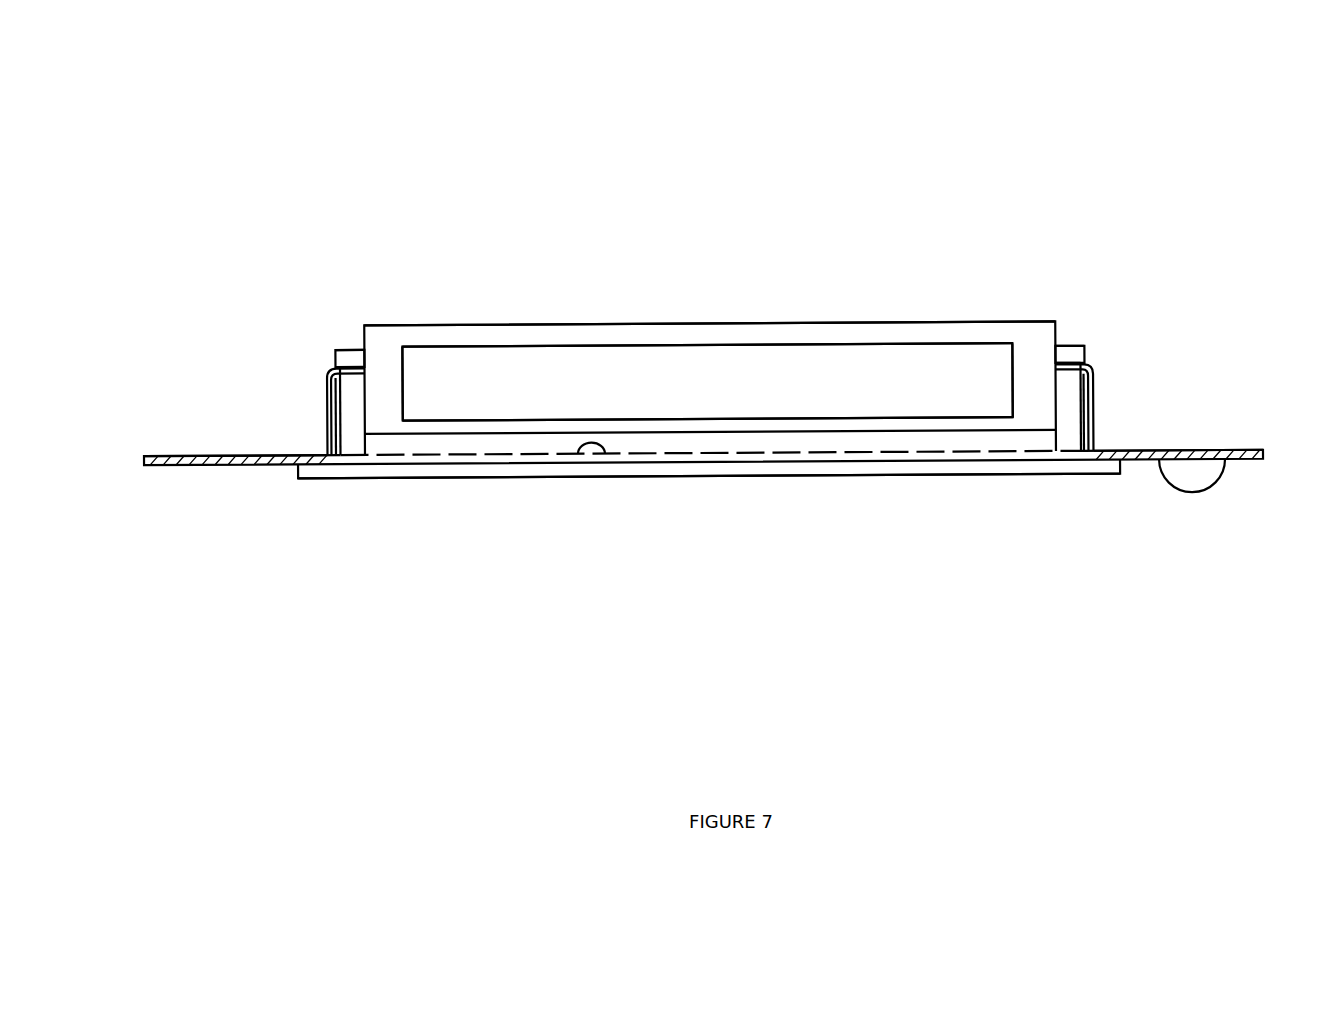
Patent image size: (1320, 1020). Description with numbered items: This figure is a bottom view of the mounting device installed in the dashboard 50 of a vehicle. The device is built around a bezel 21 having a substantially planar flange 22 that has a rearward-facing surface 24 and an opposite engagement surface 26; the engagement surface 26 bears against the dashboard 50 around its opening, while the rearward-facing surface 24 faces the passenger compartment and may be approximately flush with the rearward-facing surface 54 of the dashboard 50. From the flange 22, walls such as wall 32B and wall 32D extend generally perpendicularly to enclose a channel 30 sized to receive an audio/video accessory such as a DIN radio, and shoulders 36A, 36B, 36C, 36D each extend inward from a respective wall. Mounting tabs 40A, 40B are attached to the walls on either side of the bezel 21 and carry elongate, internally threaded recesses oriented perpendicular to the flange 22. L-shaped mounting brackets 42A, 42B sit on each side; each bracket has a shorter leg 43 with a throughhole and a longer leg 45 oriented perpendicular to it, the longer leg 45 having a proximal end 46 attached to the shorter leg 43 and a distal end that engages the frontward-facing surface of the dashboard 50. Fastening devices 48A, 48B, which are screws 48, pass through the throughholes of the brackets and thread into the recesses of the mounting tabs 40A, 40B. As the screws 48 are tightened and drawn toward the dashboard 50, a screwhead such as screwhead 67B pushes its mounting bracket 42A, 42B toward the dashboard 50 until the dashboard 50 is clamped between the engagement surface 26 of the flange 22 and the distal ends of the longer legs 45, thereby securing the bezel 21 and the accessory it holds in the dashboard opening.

The bezel 21 is at (483, 333).
The flange 22 is at (383, 470).
The rearward-facing surface 24 is at (923, 472).
The engagement surface 26 is at (583, 447).
The channel 30 is at (787, 372).
The wall 32B is at (465, 447).
The wall 32D is at (698, 363).
The shoulder 36A is at (388, 370).
The shoulder 36B is at (720, 423).
The shoulder 36C is at (1032, 377).
The shoulder 36D is at (613, 333).
The mounting tab 40A is at (1094, 373).
The mounting tab 40B is at (325, 420).
The mounting bracket 42A is at (1094, 413).
The mounting bracket 42B is at (323, 435).
The shorter leg 43 is at (330, 385).
The longer leg 45 is at (322, 452).
The proximal end 46 is at (344, 408).
The screws 48 is at (327, 453).
The fastening device 48A is at (1070, 350).
The fastening device 48B is at (350, 352).
The dashboard 50 is at (207, 453).
The rearward-facing surface of dashboard 54 is at (1233, 458).
The screwhead 67B is at (1082, 378).